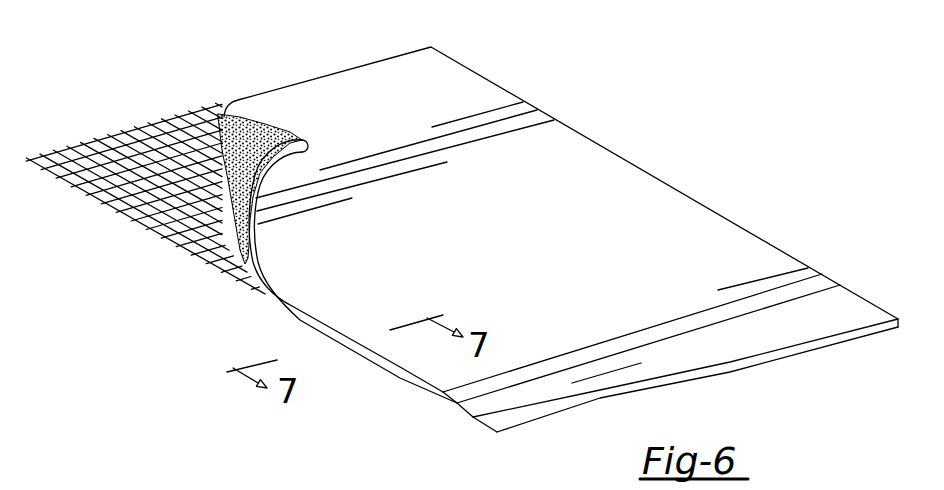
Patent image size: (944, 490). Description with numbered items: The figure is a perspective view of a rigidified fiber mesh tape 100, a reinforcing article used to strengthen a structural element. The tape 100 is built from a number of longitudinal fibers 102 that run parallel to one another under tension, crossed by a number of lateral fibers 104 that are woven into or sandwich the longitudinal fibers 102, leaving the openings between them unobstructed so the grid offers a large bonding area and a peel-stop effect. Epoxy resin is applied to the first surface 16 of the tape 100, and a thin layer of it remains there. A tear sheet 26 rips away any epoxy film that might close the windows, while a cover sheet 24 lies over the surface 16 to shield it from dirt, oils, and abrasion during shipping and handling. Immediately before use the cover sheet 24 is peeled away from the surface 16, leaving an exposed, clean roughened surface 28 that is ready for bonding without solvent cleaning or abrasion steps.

The first surface 16 is at (191, 70).
The cover sheet 24 is at (363, 82).
The tear sheet 26 is at (264, 127).
The roughened surface 28 is at (145, 181).
The rigidified fiber mesh tape 100 is at (630, 106).
The longitudinal fibers 102 is at (97, 142).
The lateral fibers 104 is at (160, 226).